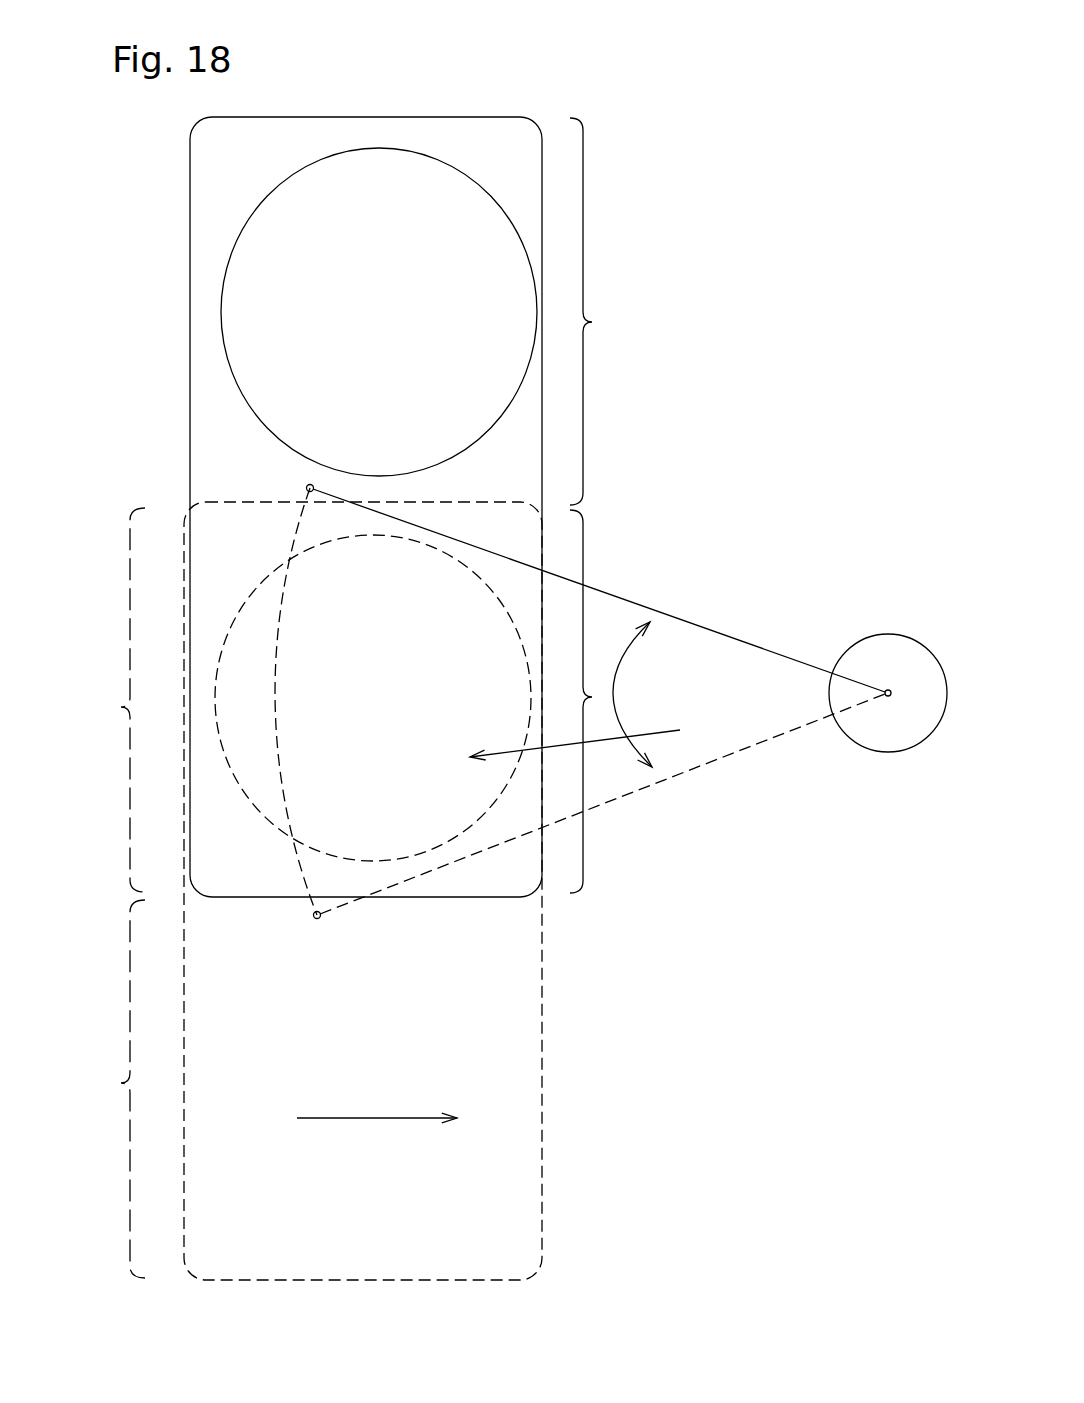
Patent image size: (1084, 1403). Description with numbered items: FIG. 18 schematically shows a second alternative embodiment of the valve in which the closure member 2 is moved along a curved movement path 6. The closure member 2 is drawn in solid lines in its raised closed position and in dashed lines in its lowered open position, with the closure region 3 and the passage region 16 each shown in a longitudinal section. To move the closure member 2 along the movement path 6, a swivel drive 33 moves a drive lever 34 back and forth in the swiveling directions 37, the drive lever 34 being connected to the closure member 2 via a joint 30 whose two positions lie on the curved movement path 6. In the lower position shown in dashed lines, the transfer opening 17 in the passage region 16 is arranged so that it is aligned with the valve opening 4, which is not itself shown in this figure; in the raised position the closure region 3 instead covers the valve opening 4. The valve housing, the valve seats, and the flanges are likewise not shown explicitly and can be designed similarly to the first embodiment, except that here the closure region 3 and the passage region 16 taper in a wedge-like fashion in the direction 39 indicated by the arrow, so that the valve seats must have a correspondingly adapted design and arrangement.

The closure member 2 is at (515, 147).
The closure region 3 is at (354, 894).
The valve opening 4 is at (584, 737).
The movement path 6 is at (288, 818).
The passage region 16 is at (355, 505).
The transfer opening 17 is at (397, 200).
The joint 30 is at (306, 487).
The swivel drive 33 is at (905, 730).
The drive lever 34 is at (612, 592).
The swiveling directions 37 is at (620, 670).
The direction 39 is at (377, 1118).